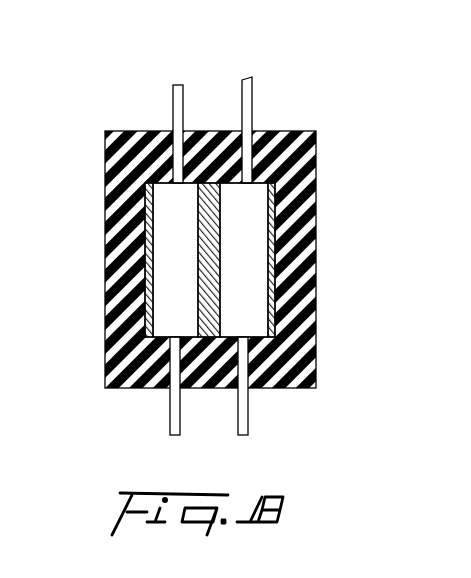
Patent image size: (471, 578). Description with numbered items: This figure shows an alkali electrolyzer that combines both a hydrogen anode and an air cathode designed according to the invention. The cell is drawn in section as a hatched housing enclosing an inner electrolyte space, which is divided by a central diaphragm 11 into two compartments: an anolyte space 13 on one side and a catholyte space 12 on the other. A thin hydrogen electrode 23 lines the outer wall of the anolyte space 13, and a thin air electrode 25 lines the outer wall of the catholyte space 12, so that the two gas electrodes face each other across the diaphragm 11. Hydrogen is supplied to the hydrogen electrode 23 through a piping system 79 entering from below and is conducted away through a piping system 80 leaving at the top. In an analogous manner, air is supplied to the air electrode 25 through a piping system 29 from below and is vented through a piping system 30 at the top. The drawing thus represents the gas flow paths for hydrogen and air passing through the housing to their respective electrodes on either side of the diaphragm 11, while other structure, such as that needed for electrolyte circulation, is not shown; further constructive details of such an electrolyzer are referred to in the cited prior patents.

The diaphragm 11 is at (213, 313).
The catholyte space 12 is at (243, 263).
The anolyte space 13 is at (167, 293).
The hydrogen electrode 23 is at (148, 233).
The air electrode 25 is at (270, 228).
The piping system 29 is at (243, 410).
The piping system 30 is at (249, 112).
The piping system 79 is at (177, 410).
The piping system 80 is at (173, 103).